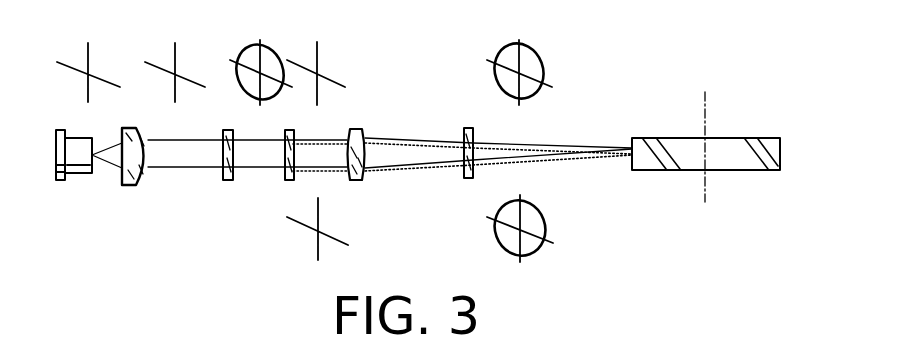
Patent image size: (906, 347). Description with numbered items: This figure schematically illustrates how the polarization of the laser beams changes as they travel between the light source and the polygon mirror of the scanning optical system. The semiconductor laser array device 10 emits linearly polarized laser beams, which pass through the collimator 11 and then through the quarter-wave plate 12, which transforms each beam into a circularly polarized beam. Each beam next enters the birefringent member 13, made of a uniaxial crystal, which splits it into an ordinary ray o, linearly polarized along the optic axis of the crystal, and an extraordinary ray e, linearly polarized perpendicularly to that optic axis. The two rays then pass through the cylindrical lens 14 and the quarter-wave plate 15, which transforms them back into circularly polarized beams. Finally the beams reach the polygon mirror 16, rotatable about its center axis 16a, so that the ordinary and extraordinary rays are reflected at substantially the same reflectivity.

The semiconductor laser array device 10 is at (78, 174).
The collimator 11 is at (128, 187).
The quarter-wave plate 12 is at (227, 181).
The birefringent member 13 is at (287, 182).
The cylindrical lens 14 is at (363, 181).
The quarter-wave plate 15 is at (470, 180).
The polygon mirror 16 is at (740, 138).
The center axis 16a is at (706, 204).